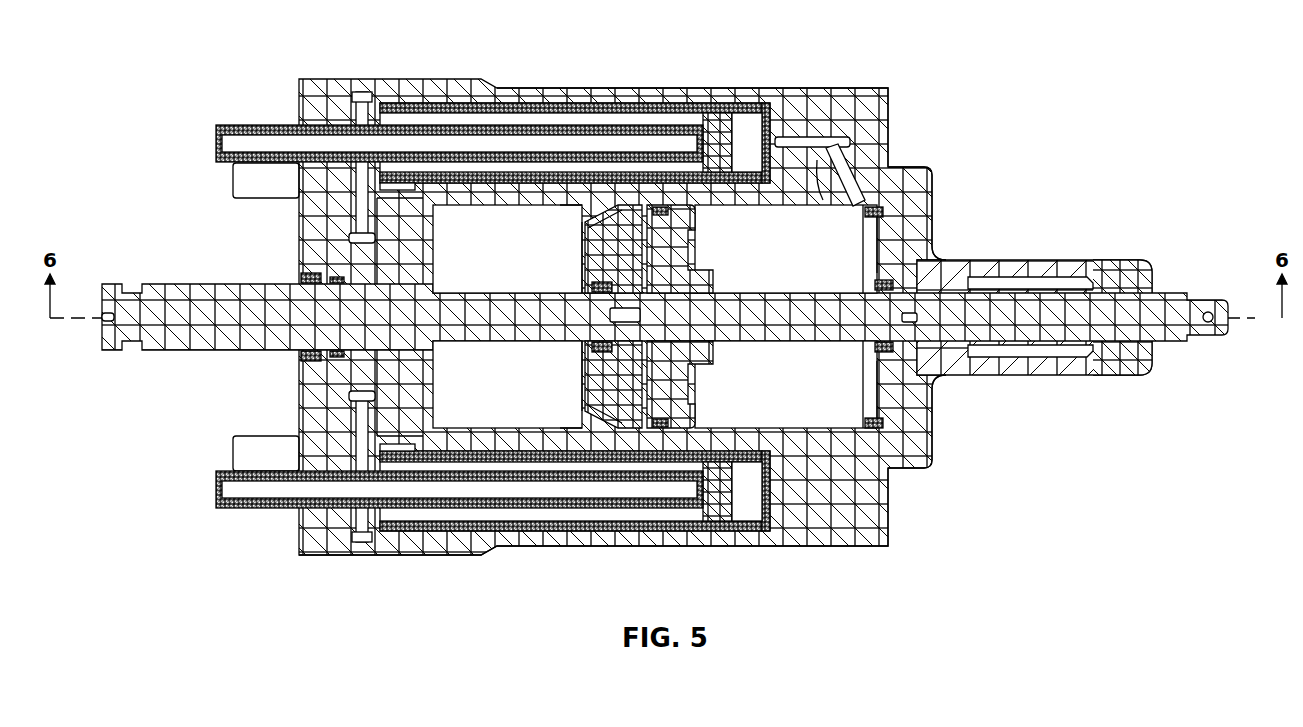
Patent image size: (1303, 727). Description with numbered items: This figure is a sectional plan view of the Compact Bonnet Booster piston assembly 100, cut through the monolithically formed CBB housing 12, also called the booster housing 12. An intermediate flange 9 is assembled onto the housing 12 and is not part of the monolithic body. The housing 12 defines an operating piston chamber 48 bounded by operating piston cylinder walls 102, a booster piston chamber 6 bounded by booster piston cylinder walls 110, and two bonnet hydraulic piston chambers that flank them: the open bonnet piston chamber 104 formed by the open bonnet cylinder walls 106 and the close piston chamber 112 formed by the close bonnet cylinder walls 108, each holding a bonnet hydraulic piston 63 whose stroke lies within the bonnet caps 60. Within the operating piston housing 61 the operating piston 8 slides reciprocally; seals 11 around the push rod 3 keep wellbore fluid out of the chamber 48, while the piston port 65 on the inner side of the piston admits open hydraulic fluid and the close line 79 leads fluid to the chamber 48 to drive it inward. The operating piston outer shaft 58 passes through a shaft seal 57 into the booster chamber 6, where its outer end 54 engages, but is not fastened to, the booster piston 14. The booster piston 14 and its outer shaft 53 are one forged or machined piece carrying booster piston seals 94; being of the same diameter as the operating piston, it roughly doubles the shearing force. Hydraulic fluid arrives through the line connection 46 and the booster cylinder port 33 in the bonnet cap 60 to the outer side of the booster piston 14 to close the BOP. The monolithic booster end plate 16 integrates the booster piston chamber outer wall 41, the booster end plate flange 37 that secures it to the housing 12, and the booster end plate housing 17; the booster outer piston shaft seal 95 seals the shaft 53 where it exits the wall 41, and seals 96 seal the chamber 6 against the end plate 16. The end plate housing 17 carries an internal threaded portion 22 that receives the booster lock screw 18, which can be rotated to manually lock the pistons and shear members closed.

The Compact Bonnet Booster (CBB) piston assembly 100 is at (256, 91).
The intermediate flange 9 is at (333, 79).
The operating piston housing 61 is at (455, 203).
The operating piston chamber 48 is at (512, 222).
The operating piston cylinder walls 102 is at (560, 208).
The CBB housing 12 is at (595, 200).
The wellbore close operating piston hydraulic fluid line 79 is at (573, 208).
The close bonnet hydraulic piston chamber cylinder walls 108 is at (577, 117).
The bonnet hydraulic piston 63 is at (663, 107).
The booster piston seals 94 is at (717, 108).
The booster piston cylinder walls 110 is at (750, 115).
The bonnet cap 60 is at (798, 88).
The hydraulic line connection 46 is at (822, 143).
The booster end plate flange 37 is at (918, 175).
The booster outer piston shaft seal 95 is at (888, 337).
The booster end plate 16 is at (1121, 237).
The operating piston 8 is at (303, 224).
The open bonnet piston chamber 104 is at (768, 207).
The booster cylinder port 33 is at (855, 205).
The push rod 3 is at (206, 338).
The seals 11 is at (302, 370).
The piston port 65 is at (302, 418).
The operating piston outer shaft 58 is at (512, 320).
The shaft seal 57 is at (590, 345).
The operating piston shaft outer end 54 is at (648, 330).
The booster piston 14 is at (684, 384).
The outer shaft 53 is at (810, 328).
The booster piston chamber outer wall 41 is at (848, 357).
The booster piston chamber 6 is at (882, 358).
The seals 96 is at (882, 422).
The booster end plate housing 17 is at (1077, 377).
The internal threaded portion 22 is at (1120, 377).
The booster lock screw 18 is at (1230, 331).
The close piston chamber 112 is at (747, 499).
The open bonnet hydraulic piston chamber cylinder walls 106 is at (523, 546).